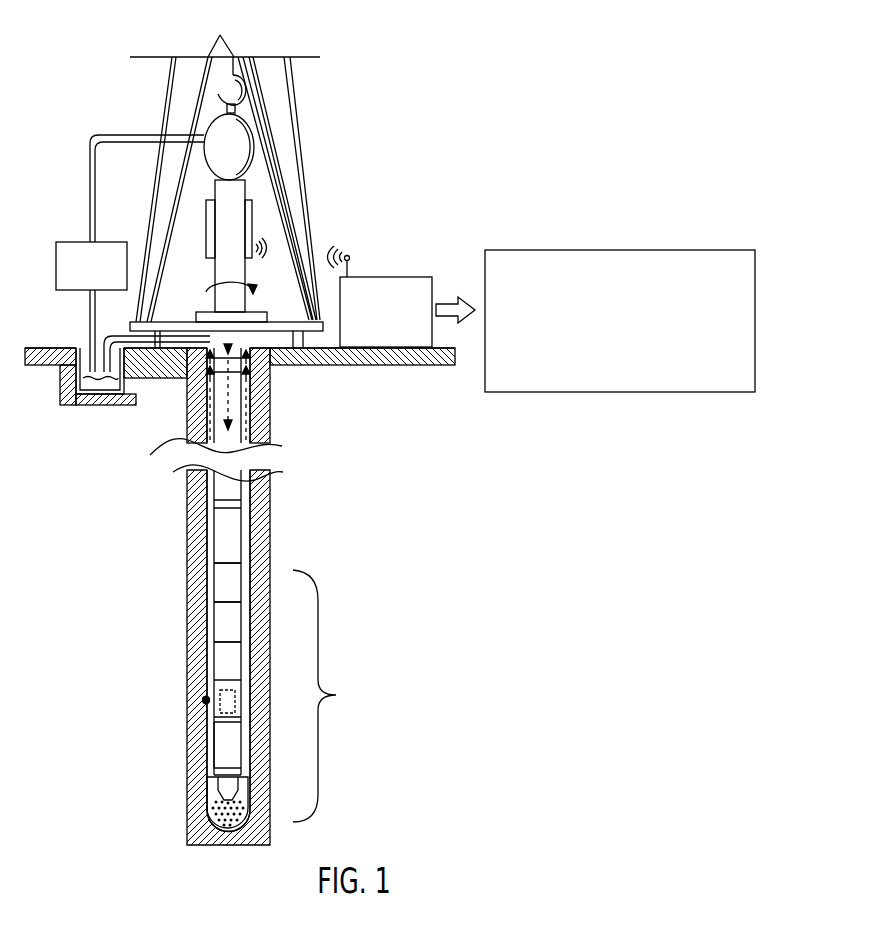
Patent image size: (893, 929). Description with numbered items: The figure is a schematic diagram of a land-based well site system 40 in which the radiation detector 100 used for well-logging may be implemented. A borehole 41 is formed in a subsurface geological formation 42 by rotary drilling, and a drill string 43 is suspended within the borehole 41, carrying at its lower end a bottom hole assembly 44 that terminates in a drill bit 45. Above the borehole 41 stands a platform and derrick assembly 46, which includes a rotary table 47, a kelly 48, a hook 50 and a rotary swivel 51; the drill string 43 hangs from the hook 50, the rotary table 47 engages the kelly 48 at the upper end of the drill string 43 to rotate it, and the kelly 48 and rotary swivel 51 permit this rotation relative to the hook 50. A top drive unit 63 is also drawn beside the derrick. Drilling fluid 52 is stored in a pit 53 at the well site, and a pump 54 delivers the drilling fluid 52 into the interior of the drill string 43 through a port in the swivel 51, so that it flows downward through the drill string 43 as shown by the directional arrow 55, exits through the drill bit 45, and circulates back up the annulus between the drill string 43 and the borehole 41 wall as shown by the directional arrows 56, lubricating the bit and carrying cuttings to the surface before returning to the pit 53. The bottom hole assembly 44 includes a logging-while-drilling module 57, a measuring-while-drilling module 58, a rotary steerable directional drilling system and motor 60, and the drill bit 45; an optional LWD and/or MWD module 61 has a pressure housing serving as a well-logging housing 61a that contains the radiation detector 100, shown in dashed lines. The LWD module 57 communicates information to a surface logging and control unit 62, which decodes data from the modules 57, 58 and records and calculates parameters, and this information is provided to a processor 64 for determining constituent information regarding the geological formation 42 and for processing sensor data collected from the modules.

The well site system 40 is at (448, 78).
The borehole 41 is at (248, 352).
The geological formation 42 is at (354, 499).
The drill string 43 is at (228, 346).
The bottom hole assembly 44 is at (329, 696).
The drill bit 45 is at (213, 797).
The platform and derrick assembly 46 is at (308, 107).
The rotary table 47 is at (253, 313).
The kelly 48 is at (220, 308).
The hook 50 is at (229, 84).
The rotary swivel 51 is at (214, 171).
The drilling fluid 52 is at (100, 386).
The pit 53 is at (83, 342).
The pump 54 is at (56, 282).
The directional arrow 55 is at (218, 418).
The directional arrows 56 is at (205, 387).
The logging-while-drilling module 57 is at (222, 620).
The measuring-while-drilling module 58 is at (210, 660).
The rotary steerable directional drilling system and motor 60 is at (220, 745).
The optional LWD and/or MWD module 61 is at (200, 695).
The well-logging housing 61a is at (241, 676).
The logging and control unit 62 is at (395, 277).
The top drive 63 is at (255, 213).
The processor 64 is at (600, 250).
The radiation detector 100 is at (204, 701).